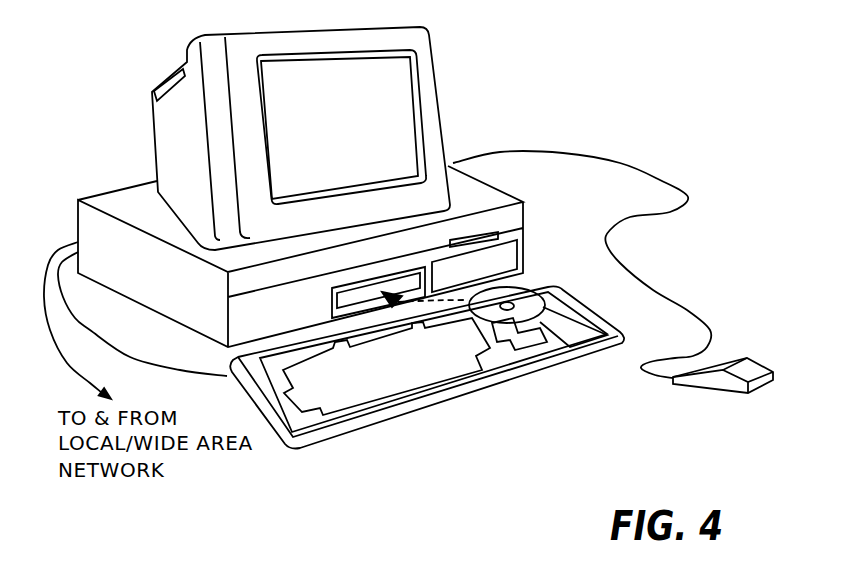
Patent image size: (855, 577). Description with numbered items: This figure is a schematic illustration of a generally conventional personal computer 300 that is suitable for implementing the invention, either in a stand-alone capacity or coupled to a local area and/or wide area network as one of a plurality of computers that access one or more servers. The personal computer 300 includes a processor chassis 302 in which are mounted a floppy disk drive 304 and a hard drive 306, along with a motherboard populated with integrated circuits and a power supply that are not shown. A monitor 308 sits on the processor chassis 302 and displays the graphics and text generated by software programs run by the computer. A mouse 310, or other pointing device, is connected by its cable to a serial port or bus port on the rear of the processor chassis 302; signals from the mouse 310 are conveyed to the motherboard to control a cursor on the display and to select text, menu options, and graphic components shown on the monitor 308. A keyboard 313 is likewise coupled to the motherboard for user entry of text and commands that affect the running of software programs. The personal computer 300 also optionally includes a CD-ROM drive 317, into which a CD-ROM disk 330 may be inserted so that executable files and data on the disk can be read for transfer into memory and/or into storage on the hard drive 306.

The personal computer 300 is at (428, 259).
The processor chassis 302 is at (522, 227).
The floppy disk drive 304 is at (490, 236).
The hard drive 306 is at (497, 258).
The monitor 308 is at (440, 87).
The mouse 310 is at (752, 394).
The keyboard 313 is at (517, 380).
The CD-ROM drive 317 is at (330, 305).
The CD-ROM disk 330 is at (547, 308).